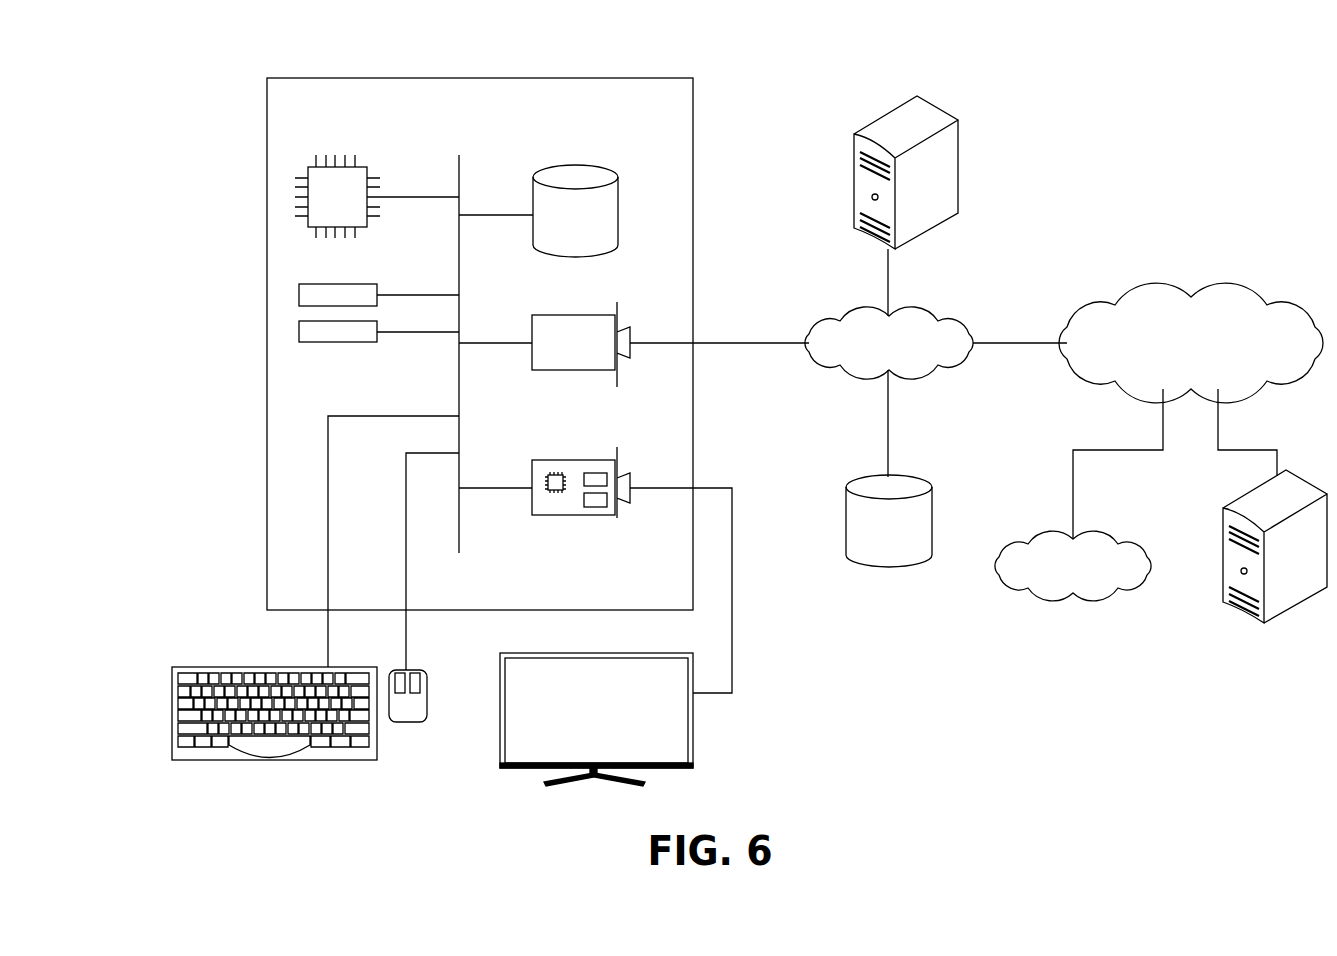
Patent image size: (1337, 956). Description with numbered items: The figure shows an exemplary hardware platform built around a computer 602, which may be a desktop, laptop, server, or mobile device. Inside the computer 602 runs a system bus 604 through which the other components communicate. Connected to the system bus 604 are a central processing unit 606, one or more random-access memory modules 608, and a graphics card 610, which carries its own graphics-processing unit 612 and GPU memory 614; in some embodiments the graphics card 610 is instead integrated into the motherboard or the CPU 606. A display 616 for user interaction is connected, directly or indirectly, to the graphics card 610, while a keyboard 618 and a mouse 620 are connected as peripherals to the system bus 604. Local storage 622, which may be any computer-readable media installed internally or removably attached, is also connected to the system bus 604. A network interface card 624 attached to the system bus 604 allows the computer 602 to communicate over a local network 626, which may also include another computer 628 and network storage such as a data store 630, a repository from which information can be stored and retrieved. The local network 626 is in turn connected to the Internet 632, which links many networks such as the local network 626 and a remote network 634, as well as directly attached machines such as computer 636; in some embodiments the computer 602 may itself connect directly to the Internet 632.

The computer 602 is at (628, 77).
The system bus 604 is at (461, 166).
The central processing unit 606 is at (363, 166).
The random-access memory modules 608 is at (378, 297).
The graphics card 610 is at (557, 496).
The graphics-processing unit 612 is at (548, 495).
The GPU memory 614 is at (595, 510).
The display 616 is at (693, 745).
The keyboard 618 is at (255, 760).
The mouse 620 is at (405, 722).
The local storage 622 is at (620, 192).
The network interface card 624 is at (530, 330).
The local network 626 is at (922, 311).
The computer 628 is at (921, 98).
The data store 630 is at (910, 477).
The Internet 632 is at (1205, 291).
The remote network 634 is at (1107, 536).
The computer 636 is at (1303, 480).